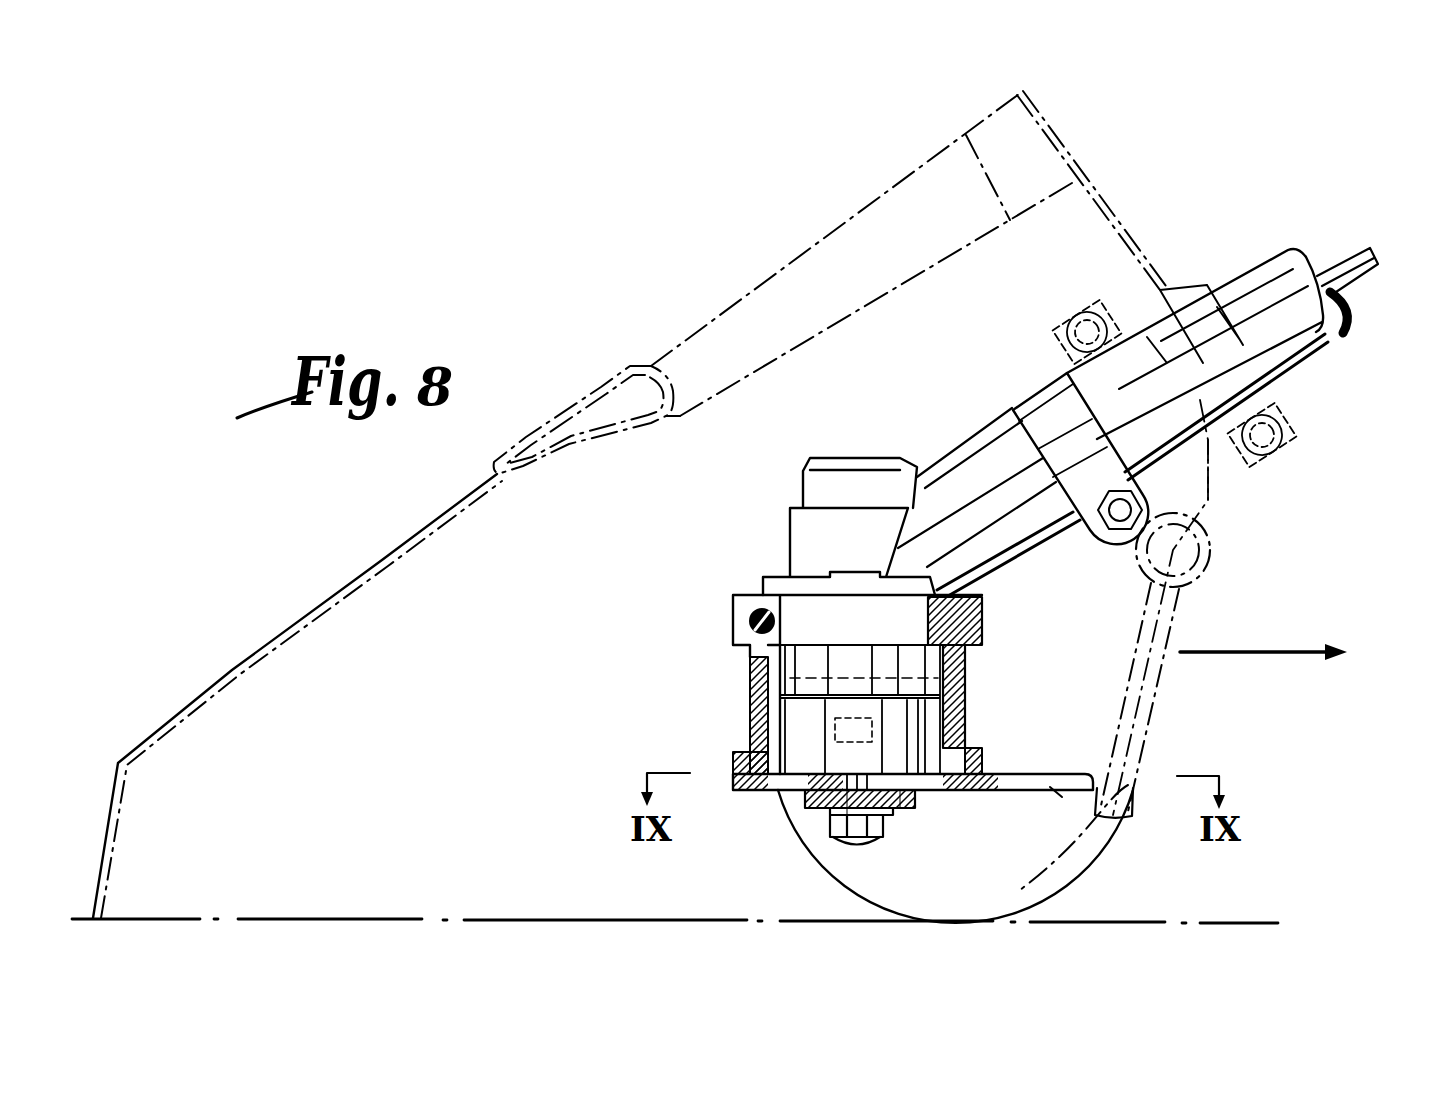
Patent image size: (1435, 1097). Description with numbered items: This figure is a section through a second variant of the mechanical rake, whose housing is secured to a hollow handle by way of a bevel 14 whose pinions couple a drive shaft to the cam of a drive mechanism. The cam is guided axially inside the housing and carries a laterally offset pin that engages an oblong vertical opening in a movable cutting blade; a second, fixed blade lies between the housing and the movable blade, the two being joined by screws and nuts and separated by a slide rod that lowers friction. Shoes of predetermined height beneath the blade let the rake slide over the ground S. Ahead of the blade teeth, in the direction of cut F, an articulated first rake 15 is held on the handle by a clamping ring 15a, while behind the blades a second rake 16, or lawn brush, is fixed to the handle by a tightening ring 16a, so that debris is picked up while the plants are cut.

The bevel 14 is at (765, 551).
The first rake 15 is at (1133, 678).
The clamping ring 15a is at (1193, 477).
The second rake 16 is at (295, 641).
The tightening ring 16a is at (1343, 470).
The ground S is at (380, 912).
The direction of cut F is at (1263, 636).